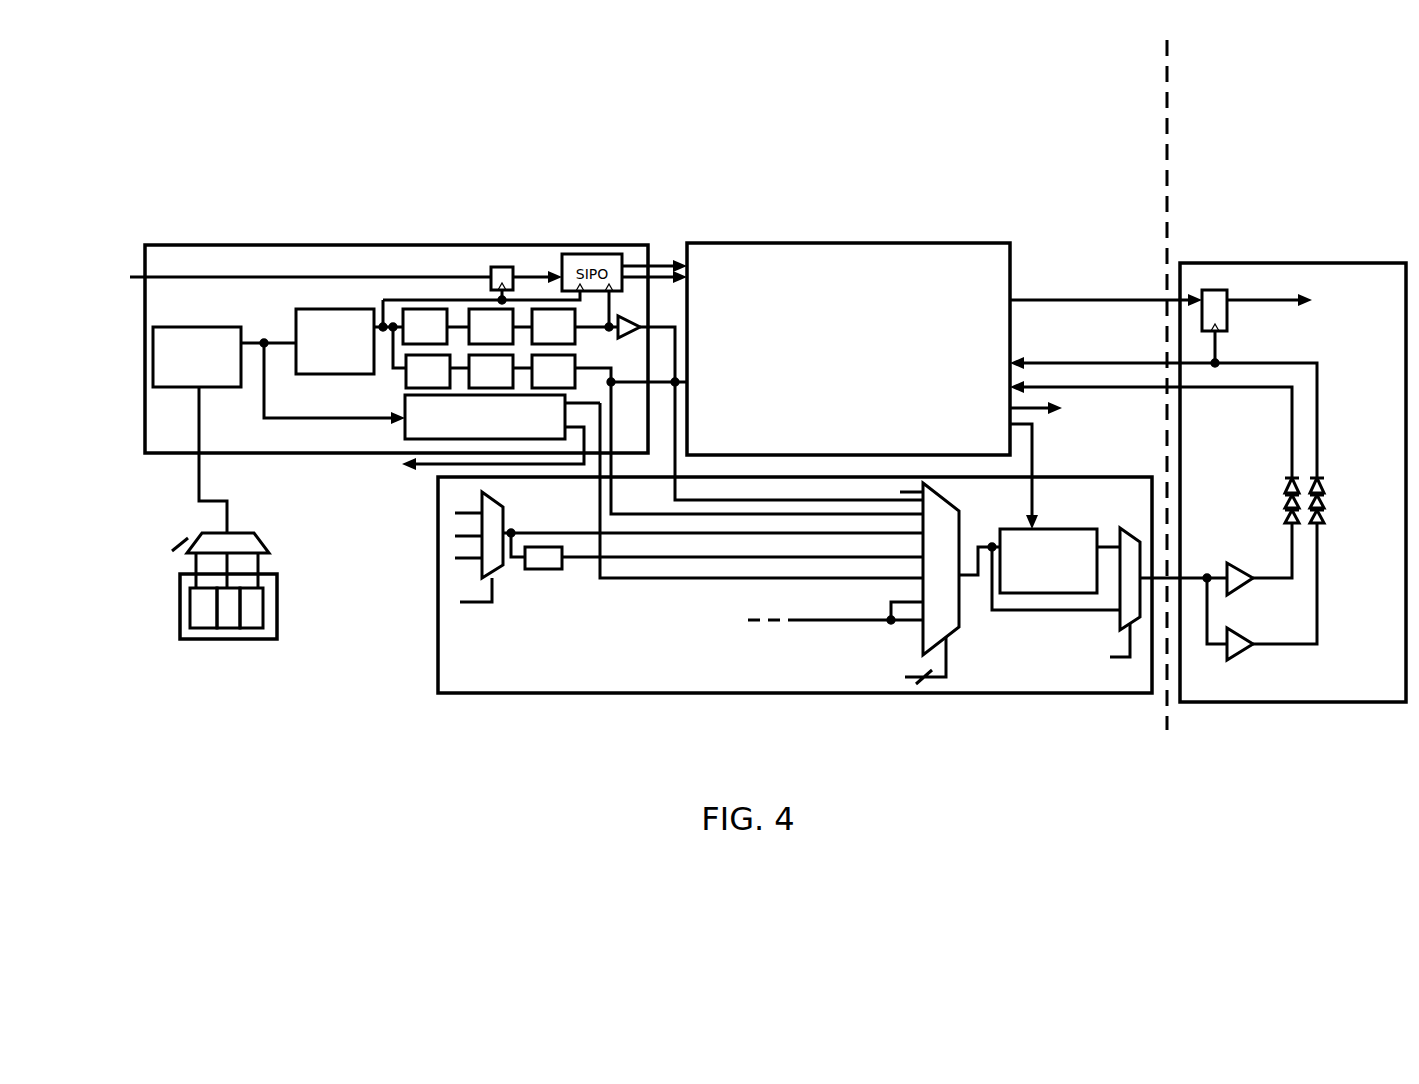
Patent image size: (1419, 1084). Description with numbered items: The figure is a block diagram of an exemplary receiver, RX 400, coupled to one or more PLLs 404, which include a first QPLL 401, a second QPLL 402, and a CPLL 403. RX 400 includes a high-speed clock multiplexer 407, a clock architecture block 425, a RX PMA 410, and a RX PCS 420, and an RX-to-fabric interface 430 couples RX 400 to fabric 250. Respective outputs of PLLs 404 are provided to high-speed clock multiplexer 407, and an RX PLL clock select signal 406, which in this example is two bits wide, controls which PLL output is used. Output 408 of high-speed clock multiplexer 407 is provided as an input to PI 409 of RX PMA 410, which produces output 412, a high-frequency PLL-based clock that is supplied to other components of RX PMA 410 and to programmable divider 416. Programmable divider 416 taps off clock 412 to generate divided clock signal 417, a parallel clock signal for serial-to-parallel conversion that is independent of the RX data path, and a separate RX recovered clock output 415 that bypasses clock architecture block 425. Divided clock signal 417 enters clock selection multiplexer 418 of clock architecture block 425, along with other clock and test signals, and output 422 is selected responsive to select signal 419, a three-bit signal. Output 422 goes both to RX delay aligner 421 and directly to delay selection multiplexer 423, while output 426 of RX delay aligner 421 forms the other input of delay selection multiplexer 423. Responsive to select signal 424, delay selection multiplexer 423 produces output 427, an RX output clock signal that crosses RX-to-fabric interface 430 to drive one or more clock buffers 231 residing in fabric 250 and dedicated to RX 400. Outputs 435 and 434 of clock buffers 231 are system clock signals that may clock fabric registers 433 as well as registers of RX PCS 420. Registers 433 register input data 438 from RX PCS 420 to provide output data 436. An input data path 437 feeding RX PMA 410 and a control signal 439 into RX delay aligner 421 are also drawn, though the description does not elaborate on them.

The RX 400 is at (1036, 89).
The RX PMA 410 is at (290, 244).
The RX PCS 420 is at (712, 243).
The fabric 250 is at (1222, 262).
The RX-to-fabric interface 430 is at (1167, 723).
The input data path 437 is at (130, 270).
The PI 409 is at (175, 326).
The output of PI 412 is at (252, 338).
The programmable divider 416 is at (403, 440).
The RX recovered clock output 415 is at (418, 470).
The output of high-speed clock multiplexer 408 is at (213, 496).
The RX PLL clock select signal 406 is at (176, 545).
The high-speed clock multiplexer 407 is at (187, 553).
The PLLs 404 is at (278, 600).
The first QPLL 401 is at (202, 630).
The second QPLL 402 is at (228, 630).
The CPLL 403 is at (248, 630).
The clock architecture block 425 is at (950, 693).
The divided clock signal 417 is at (631, 580).
The clock selection multiplexer 418 is at (920, 646).
The select signal 419 is at (906, 677).
The RX delay aligner 421 is at (1010, 526).
The output of clock selection multiplexer 422 is at (965, 577).
The output of RX delay aligner 426 is at (1106, 544).
The delay selection multiplexer 423 is at (1120, 622).
The select signal 424 is at (1110, 657).
The control signal 439 is at (1035, 445).
The input data 438 is at (1043, 300).
The output data 436 is at (1247, 300).
The registers 433 is at (1230, 312).
The output of clock buffer 435 is at (1289, 537).
The output of clock buffer 434 is at (1318, 568).
The RX output clock signal 427 is at (1190, 578).
The clock buffers 231 is at (1247, 588).